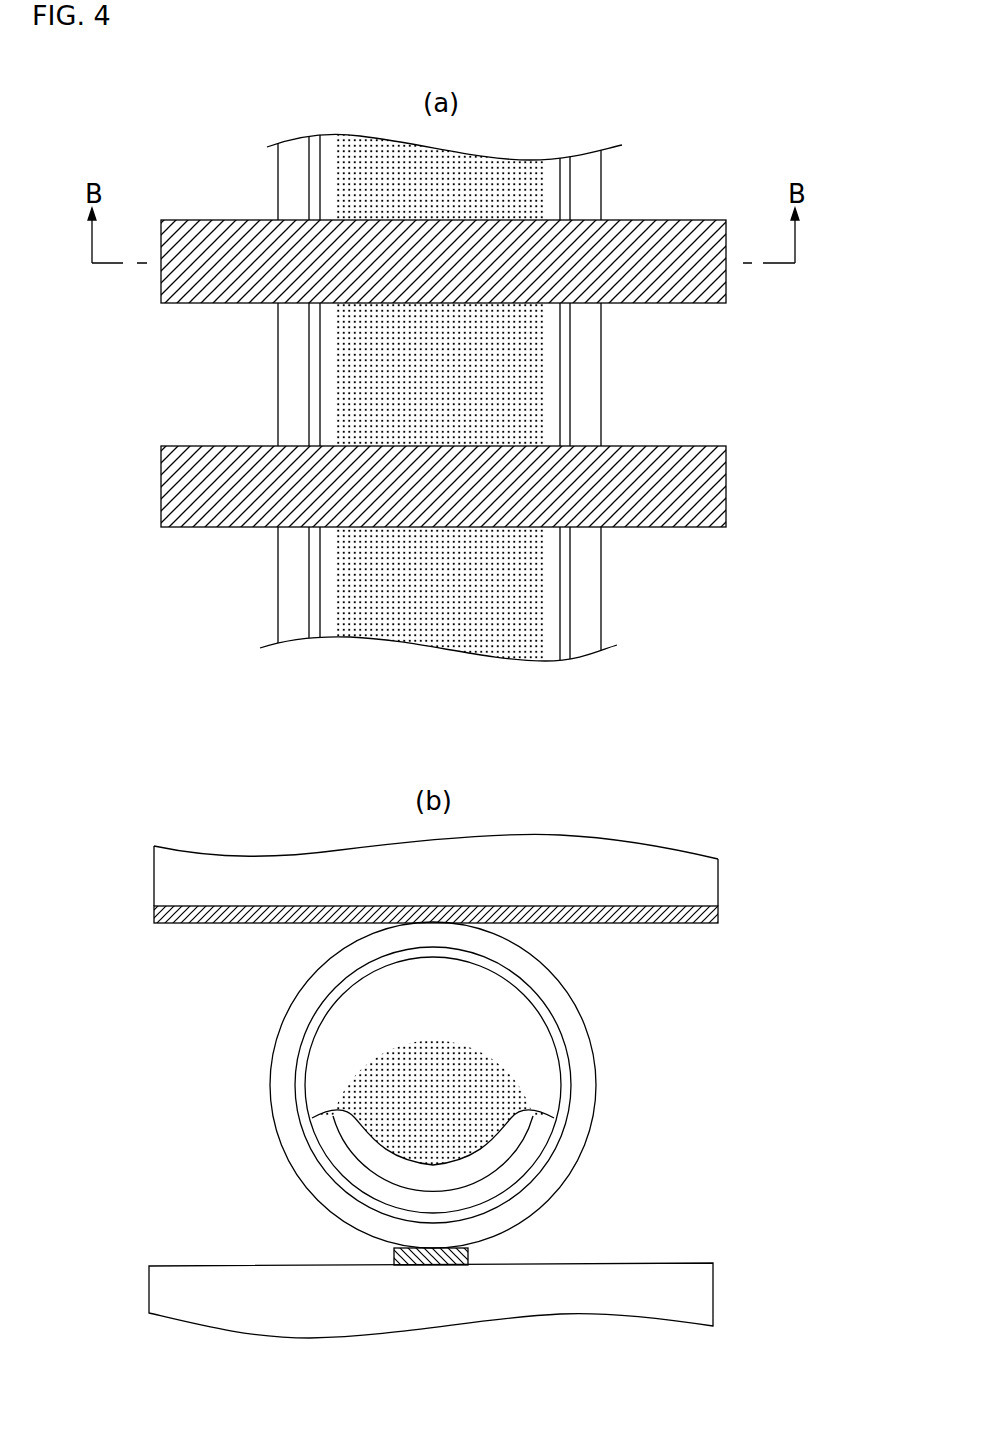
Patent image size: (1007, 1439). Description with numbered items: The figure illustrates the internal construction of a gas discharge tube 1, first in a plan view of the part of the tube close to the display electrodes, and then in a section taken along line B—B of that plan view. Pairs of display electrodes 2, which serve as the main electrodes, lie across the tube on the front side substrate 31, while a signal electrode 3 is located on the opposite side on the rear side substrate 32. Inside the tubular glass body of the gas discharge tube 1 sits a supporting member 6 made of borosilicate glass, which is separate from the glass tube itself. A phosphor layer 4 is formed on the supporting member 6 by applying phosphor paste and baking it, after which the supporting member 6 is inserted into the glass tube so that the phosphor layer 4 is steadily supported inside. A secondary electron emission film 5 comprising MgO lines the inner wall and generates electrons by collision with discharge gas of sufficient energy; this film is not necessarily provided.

The gas discharge tube 1 is at (595, 182).
The display electrodes 2 is at (726, 480).
The signal electrode 3 is at (483, 1255).
The phosphor layer 4 is at (528, 580).
The secondary electron emission film 5 is at (312, 583).
The supporting member 6 is at (552, 618).
The front side substrate 31 is at (700, 883).
The rear side substrate 32 is at (695, 1292).